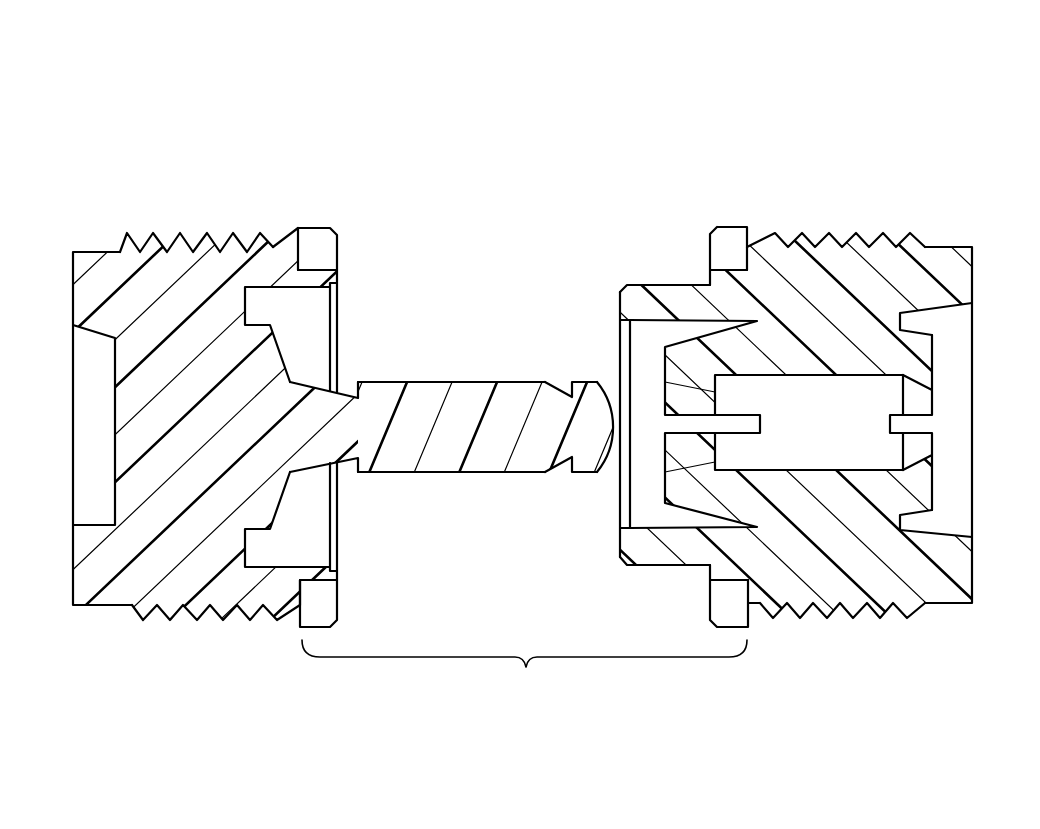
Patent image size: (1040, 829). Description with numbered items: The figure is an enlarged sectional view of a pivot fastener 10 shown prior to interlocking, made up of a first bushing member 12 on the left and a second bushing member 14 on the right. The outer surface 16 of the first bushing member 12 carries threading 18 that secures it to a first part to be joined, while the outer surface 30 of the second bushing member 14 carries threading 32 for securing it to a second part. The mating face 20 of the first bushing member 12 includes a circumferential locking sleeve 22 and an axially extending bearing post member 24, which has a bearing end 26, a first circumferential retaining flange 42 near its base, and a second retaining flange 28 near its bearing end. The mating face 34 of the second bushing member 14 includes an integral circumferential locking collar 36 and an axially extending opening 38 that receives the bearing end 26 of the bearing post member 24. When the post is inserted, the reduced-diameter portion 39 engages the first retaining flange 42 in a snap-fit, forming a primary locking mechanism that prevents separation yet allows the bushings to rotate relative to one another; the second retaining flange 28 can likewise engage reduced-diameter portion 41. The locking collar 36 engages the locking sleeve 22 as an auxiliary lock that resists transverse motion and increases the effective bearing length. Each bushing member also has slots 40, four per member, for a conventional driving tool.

The pivot fastener 10 is at (457, 136).
The first bushing member 12 is at (210, 226).
The second bushing member 14 is at (835, 226).
The outer surface 16 is at (123, 243).
The threading 18 is at (160, 243).
The mating face 20 is at (380, 541).
The circumferential locking sleeve 22 is at (250, 300).
The bearing post member 24 is at (456, 382).
The bearing end 26 is at (611, 392).
The second retaining flange 28 is at (571, 393).
The outer surface 30 is at (922, 250).
The threading 32 is at (885, 238).
The mating face 34 is at (596, 540).
The circumferential locking collar 36 is at (647, 285).
The opening 38 is at (757, 413).
The reduced-diameter portion 39 is at (690, 483).
The slots 40 is at (337, 252).
The reduced-diameter portion 41 is at (930, 386).
The first circumferential retaining flange 42 is at (357, 383).